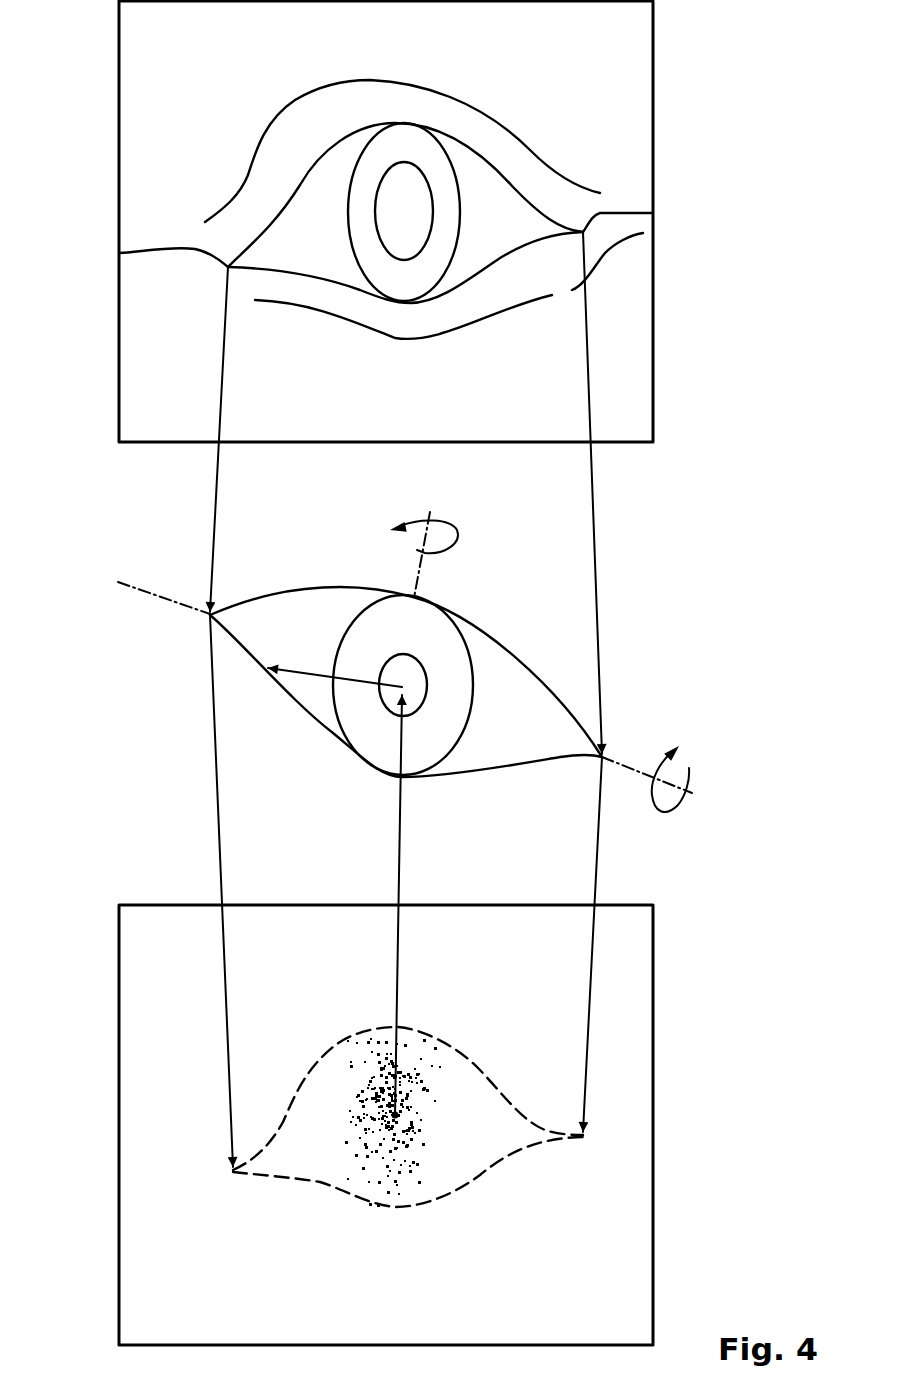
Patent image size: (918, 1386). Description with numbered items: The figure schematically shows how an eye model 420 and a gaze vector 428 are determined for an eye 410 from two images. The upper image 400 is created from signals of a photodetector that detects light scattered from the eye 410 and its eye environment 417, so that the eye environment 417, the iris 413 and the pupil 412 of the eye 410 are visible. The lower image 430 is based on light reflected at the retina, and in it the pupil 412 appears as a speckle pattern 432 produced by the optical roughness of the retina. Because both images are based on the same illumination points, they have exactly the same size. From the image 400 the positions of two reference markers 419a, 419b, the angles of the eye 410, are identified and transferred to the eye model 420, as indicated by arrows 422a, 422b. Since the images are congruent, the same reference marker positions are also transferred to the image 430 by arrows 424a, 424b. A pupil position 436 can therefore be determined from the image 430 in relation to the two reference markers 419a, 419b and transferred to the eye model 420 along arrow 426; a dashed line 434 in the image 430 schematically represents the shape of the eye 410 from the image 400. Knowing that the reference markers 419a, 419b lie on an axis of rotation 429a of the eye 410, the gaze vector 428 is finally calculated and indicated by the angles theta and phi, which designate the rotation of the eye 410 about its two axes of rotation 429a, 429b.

The image 400 is at (688, 66).
The eye 410 is at (310, 120).
The pupil 412 is at (405, 187).
The iris 413 is at (438, 165).
The eye environment 417 is at (152, 107).
The reference marker 419a is at (653, 213).
The reference marker 419b is at (119, 253).
The eye model 420 is at (688, 610).
The arrow 422a is at (214, 501).
The arrow 422b is at (597, 522).
The arrow 424a is at (217, 833).
The arrow 424b is at (600, 866).
The arrow 426 is at (400, 832).
The gaze vector 428 is at (307, 673).
The axis of rotation 429a is at (137, 593).
The axis of rotation 429b is at (420, 570).
The image 430 is at (688, 968).
The speckle pattern 432 is at (366, 1140).
The dashed line 434 is at (500, 1167).
The pupil position 436 is at (400, 1117).